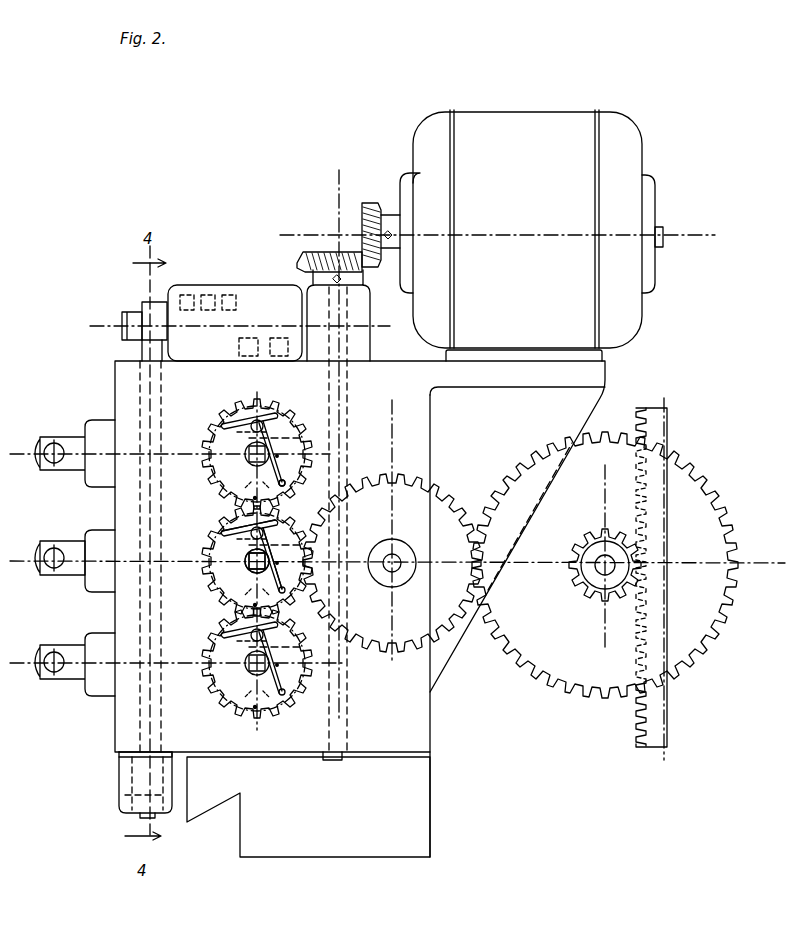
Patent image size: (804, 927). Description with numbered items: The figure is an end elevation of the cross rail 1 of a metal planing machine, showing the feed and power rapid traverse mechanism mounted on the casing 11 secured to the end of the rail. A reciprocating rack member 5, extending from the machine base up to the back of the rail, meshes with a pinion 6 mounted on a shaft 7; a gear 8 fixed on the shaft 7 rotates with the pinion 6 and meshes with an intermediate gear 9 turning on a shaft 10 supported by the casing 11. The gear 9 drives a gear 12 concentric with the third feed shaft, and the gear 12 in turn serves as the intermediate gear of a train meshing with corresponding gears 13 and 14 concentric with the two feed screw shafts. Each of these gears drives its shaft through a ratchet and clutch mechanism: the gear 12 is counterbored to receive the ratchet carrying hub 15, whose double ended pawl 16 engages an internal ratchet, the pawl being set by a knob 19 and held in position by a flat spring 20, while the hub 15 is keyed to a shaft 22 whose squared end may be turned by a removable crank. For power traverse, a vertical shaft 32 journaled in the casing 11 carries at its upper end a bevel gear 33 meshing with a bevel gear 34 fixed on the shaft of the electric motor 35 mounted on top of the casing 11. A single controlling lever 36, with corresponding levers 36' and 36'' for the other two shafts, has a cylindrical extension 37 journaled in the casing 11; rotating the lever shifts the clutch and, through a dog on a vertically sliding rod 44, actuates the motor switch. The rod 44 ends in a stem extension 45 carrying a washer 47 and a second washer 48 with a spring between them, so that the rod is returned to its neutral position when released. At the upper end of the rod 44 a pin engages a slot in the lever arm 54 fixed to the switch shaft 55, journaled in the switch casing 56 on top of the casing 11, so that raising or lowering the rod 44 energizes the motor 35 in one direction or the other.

The cross rail 1 is at (415, 797).
The reciprocating rack member 5 is at (658, 420).
The pinion 6 is at (609, 530).
The shaft 7 is at (590, 573).
The gear 8 is at (494, 480).
The intermediate gear 9 is at (440, 516).
The shaft 10 is at (400, 566).
The casing 11 is at (420, 708).
The gear 12 is at (213, 588).
The gear 13 is at (212, 431).
The gear 14 is at (214, 690).
The ratchet carrying hub 15 is at (216, 545).
The double ended pawl 16 is at (285, 498).
The knob 19 is at (225, 525).
The flat spring 20 is at (300, 566).
The shaft 22 is at (232, 563).
The vertical shaft 32 is at (340, 416).
The bevel gear 33 is at (305, 256).
The bevel gear 34 is at (372, 203).
The electric motor 35 is at (513, 125).
The lever 36 is at (75, 553).
The lever 36' is at (75, 446).
The lever 36'' is at (75, 657).
The cylindrical extension 37 is at (72, 568).
The rod 44 is at (145, 348).
The stem extension 45 is at (140, 772).
The washer 47 is at (132, 793).
The second washer 48 is at (160, 752).
The lever arm 54 is at (124, 323).
The switch shaft 55 is at (142, 316).
The switch casing 56 is at (234, 292).